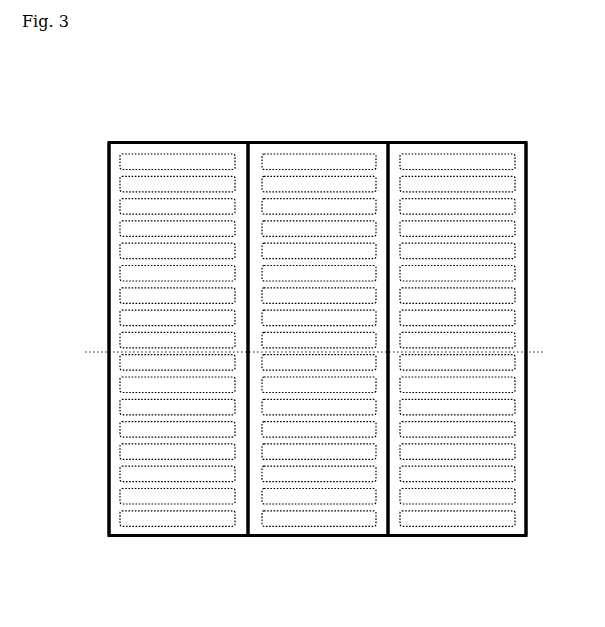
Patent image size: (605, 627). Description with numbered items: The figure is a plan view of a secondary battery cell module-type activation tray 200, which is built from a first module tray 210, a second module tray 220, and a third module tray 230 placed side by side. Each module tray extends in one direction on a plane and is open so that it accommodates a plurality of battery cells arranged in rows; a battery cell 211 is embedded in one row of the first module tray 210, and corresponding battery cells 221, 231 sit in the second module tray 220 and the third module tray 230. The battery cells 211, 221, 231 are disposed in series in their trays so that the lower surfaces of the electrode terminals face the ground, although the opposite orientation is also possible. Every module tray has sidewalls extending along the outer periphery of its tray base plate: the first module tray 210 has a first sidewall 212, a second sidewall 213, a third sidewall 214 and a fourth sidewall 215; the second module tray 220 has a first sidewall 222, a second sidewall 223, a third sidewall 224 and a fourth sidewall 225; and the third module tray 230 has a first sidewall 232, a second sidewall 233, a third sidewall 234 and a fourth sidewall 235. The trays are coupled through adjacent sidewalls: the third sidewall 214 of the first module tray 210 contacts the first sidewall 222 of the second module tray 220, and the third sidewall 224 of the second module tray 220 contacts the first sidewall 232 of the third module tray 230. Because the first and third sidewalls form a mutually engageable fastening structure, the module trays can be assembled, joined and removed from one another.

The secondary battery cell module-type activation tray 200 is at (108, 100).
The first module tray 210 is at (156, 341).
The battery cell 211 is at (119, 202).
The first sidewall 212 is at (108, 238).
The second sidewall 213 is at (176, 142).
The third sidewall 214 is at (245, 510).
The bottom side of first panel portion 215 is at (164, 538).
The second module tray 220 is at (318, 353).
The battery cell 221 is at (289, 525).
The first sidewall 222 is at (254, 538).
The second sidewall 223 is at (348, 142).
The third sidewall 224 is at (384, 514).
The bottom side of second panel portion 225 is at (348, 538).
The third module tray 230 is at (482, 347).
The battery cell 231 is at (492, 277).
The first sidewall 232 is at (390, 539).
The second sidewall 233 is at (478, 142).
The third sidewall 234 is at (527, 455).
The bottom side of third panel portion 235 is at (462, 537).